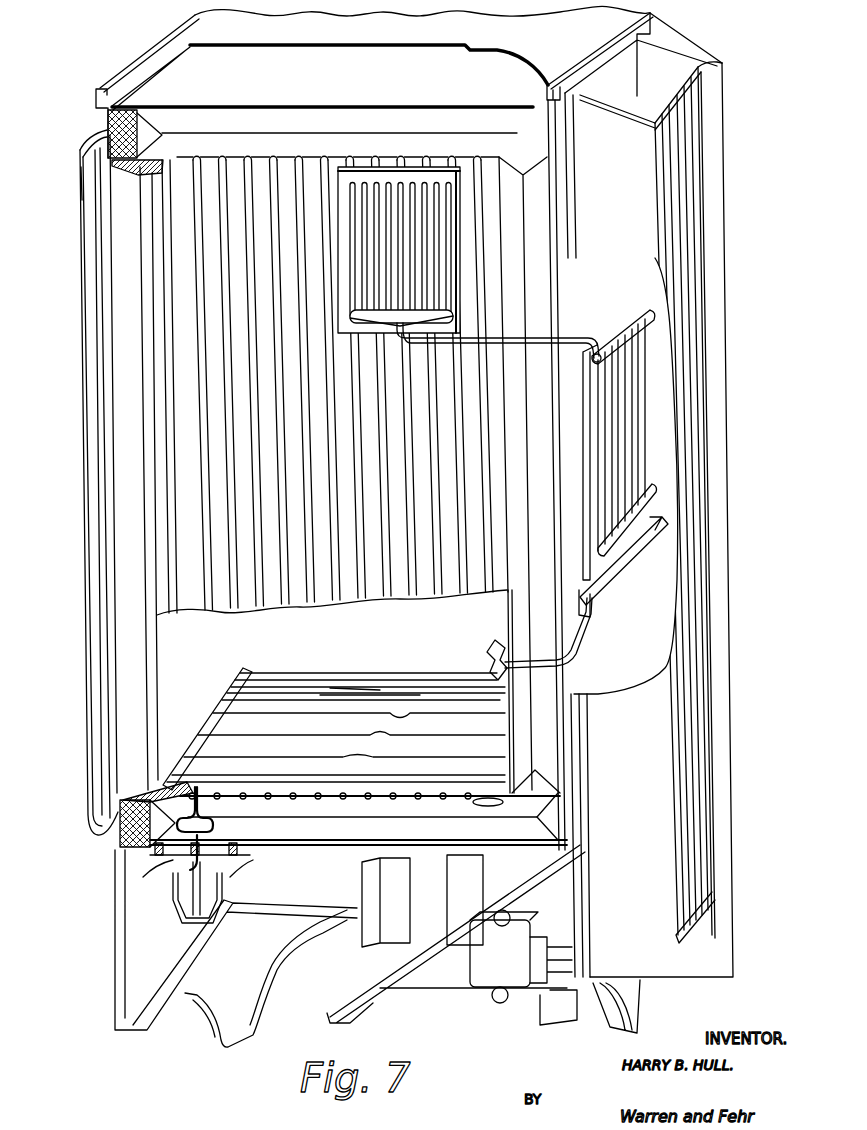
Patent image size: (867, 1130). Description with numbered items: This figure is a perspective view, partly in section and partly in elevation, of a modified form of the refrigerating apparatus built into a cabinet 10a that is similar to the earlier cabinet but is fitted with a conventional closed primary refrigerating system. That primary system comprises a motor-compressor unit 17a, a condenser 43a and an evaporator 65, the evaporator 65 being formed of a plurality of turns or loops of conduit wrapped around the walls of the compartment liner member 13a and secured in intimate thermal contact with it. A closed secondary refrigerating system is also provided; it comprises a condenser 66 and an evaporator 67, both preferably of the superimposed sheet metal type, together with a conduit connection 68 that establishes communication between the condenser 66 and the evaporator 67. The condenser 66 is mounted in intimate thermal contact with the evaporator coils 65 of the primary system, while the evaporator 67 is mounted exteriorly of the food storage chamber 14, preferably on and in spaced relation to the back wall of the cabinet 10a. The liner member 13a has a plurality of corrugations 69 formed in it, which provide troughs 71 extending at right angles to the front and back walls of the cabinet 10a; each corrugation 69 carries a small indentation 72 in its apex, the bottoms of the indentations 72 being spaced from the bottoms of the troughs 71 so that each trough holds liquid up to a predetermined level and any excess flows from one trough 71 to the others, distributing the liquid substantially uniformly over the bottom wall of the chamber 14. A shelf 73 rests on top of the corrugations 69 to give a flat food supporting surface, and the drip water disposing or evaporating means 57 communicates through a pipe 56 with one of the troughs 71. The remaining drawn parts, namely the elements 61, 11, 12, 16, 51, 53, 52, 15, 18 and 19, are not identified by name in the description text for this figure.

The top closure 61 is at (188, 32).
The condenser 66 is at (385, 182).
The inner liner 11 is at (552, 140).
The outer shell 12 is at (562, 214).
The conduit connection 68 is at (533, 340).
The compartment liner member 13a is at (180, 338).
The cabinet 10a is at (80, 384).
The evaporator 67 is at (640, 425).
The evaporator 65 is at (253, 507).
The outer wall 16 is at (108, 612).
The bracket 51 is at (632, 547).
The food storage chamber 14 is at (425, 627).
The shelf 73 is at (333, 674).
The clamp 53 is at (497, 652).
The connecting tube 52 is at (580, 652).
The condenser 43a is at (706, 697).
The corrugations 69 is at (247, 723).
The troughs 71 is at (213, 787).
The pipe 56 is at (203, 836).
The indentation 72 is at (367, 760).
The motor-compressor unit 17a is at (393, 883).
The base 15 is at (290, 899).
The drip water disposing or evaporating means 57 is at (175, 908).
The base rail 18 is at (440, 972).
The motor unit 19 is at (480, 975).